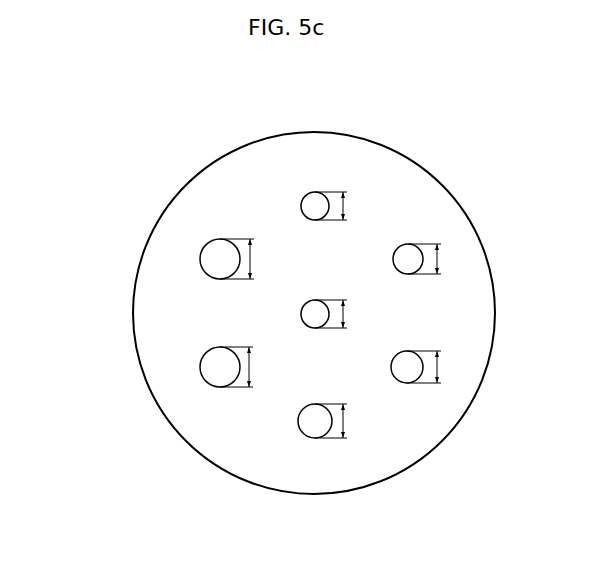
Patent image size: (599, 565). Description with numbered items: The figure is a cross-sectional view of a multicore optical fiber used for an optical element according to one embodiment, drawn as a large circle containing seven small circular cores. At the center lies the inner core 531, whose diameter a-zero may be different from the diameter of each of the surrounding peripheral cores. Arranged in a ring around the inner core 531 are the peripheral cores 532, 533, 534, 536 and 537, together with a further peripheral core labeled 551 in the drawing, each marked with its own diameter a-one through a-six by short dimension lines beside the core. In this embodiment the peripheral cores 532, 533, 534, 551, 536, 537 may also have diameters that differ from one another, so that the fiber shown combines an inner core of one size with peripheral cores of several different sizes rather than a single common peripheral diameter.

The inner core 531 is at (301, 314).
The peripheral core 532 is at (304, 195).
The peripheral core 533 is at (398, 245).
The peripheral core 534 is at (398, 383).
The fourth opening a4 551 is at (298, 421).
The peripheral core 536 is at (200, 367).
The peripheral core 537 is at (200, 256).